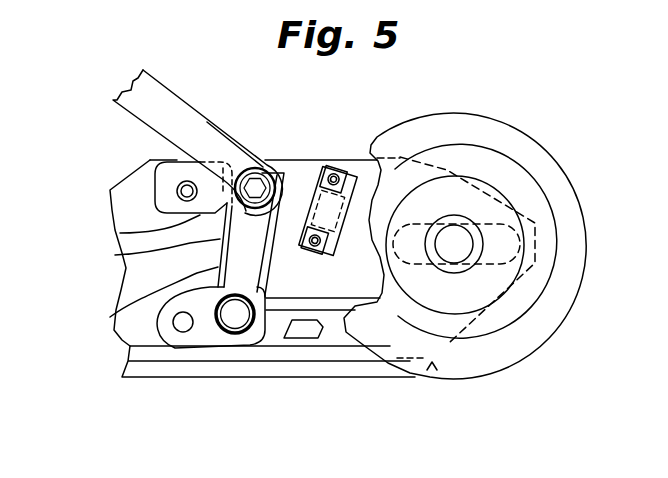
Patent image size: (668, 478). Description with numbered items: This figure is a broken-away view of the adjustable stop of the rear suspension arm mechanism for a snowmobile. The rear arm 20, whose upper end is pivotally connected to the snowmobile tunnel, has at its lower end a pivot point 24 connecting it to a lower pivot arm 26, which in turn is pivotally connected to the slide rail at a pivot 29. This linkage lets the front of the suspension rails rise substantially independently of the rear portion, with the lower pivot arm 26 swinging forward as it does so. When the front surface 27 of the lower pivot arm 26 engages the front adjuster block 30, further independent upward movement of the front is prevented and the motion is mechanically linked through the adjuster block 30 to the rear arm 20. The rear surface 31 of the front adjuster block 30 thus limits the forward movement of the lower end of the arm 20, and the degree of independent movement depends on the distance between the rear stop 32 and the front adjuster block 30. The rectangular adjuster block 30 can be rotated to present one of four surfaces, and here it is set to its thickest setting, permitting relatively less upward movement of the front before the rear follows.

The rear arm 20 is at (172, 108).
The pivot point 24 is at (265, 168).
The lower pivot arm 26 is at (187, 292).
The front surface 27 is at (240, 262).
The pivot pin 29 is at (237, 320).
The front adjuster block 30 is at (150, 178).
The rear surface 31 is at (120, 233).
The rear stop 32 is at (301, 158).